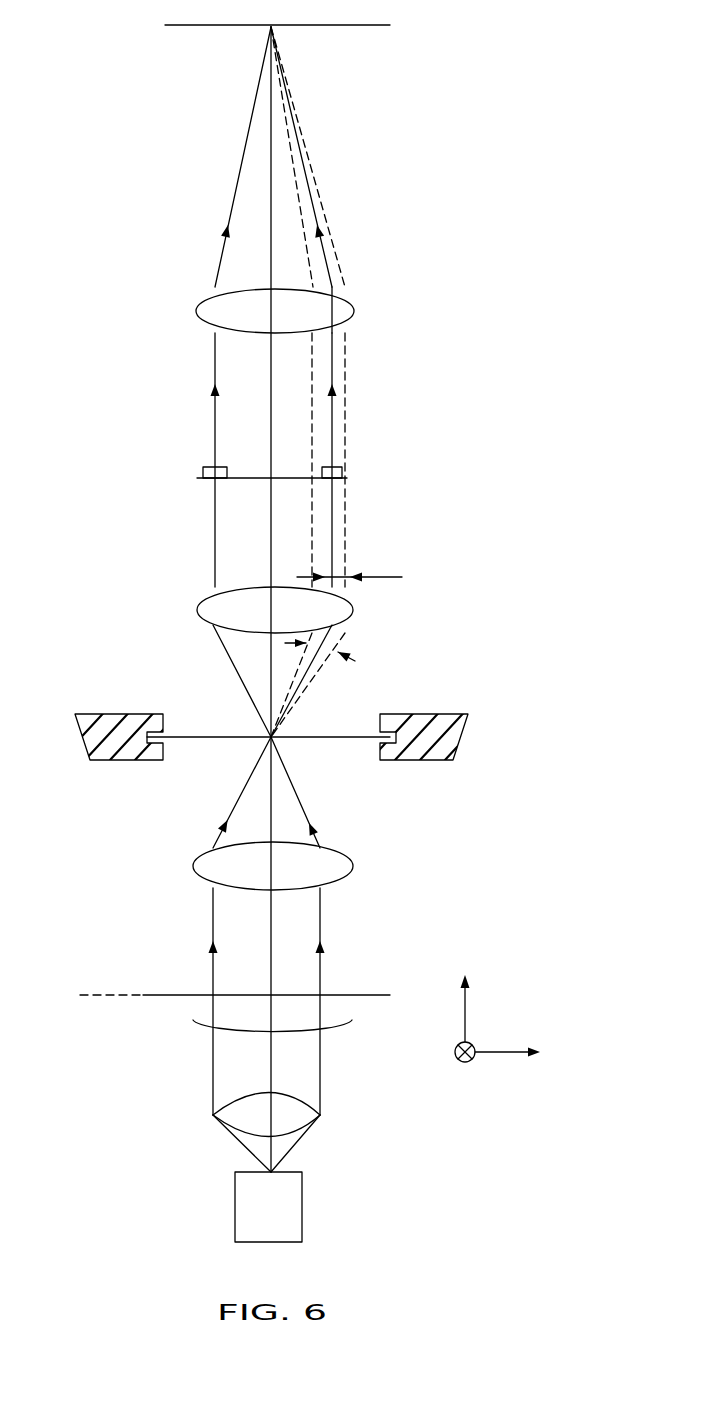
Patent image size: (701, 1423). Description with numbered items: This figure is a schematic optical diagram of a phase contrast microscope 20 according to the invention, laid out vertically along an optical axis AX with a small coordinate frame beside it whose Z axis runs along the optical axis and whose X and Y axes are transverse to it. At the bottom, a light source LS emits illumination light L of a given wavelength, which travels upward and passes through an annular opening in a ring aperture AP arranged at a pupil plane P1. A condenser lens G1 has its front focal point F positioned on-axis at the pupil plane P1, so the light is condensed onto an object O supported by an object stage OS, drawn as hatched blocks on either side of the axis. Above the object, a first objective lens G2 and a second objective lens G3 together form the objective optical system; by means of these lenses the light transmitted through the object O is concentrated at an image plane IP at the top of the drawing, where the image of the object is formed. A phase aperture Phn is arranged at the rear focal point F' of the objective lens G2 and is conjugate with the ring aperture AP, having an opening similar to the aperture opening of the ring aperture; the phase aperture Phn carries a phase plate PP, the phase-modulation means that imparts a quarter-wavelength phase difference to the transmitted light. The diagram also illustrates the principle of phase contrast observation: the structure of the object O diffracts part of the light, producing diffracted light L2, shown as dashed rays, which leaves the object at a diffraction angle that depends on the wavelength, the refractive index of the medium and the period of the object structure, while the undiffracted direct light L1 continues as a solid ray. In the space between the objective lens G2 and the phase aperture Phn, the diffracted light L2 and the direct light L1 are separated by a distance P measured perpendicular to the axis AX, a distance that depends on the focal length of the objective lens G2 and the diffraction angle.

The phase contrast microscope 20 is at (421, 114).
The image plane IP is at (365, 25).
The optical axis AX is at (274, 122).
The second objective lens G3 is at (355, 312).
The first objective lens G2 is at (353, 612).
The condenser lens G1 is at (353, 866).
The rear focal point F' is at (292, 459).
The front focal point F is at (289, 978).
The phase plate PP is at (330, 468).
The phase aperture Phn is at (348, 478).
The diffracted light L2 is at (313, 525).
The direct light L1 is at (333, 568).
The distance P is at (392, 577).
The object O is at (327, 737).
The object stage OS is at (420, 713).
The ring aperture AP is at (372, 995).
The pupil plane P1 is at (110, 996).
The illumination light L is at (352, 1027).
The light source LS is at (348, 1097).
The Z axis Z is at (474, 1004).
The X axis X is at (517, 1053).
The Y axis Y is at (468, 1064).